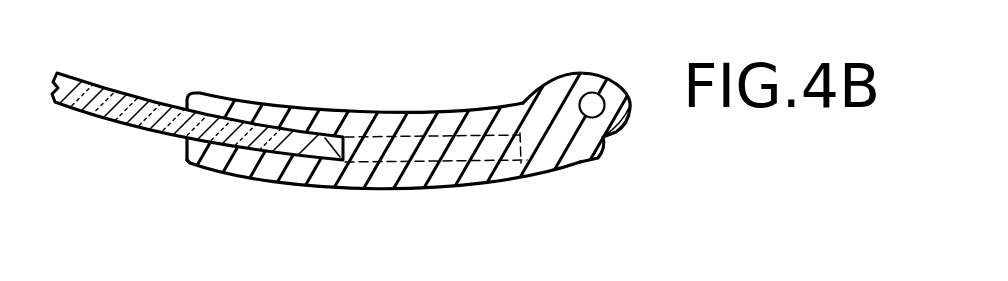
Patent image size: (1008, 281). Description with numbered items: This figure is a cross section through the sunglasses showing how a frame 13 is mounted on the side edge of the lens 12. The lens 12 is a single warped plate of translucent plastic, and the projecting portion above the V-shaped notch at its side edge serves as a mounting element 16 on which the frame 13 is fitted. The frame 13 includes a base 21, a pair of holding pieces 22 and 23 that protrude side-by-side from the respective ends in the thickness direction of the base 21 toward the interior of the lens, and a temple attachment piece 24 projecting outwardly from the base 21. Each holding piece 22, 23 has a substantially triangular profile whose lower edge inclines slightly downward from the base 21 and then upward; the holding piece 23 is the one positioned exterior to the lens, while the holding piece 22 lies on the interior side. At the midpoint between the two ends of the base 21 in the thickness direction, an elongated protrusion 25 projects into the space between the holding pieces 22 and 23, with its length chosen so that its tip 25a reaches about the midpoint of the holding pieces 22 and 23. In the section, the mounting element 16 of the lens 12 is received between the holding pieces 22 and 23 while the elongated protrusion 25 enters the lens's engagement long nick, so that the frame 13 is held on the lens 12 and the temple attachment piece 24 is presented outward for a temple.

The lens 12 is at (108, 120).
The mounting element 16 is at (125, 107).
The frame 13 is at (481, 99).
The holding piece 22 is at (263, 110).
The holding piece 23 is at (257, 173).
The temple attachment piece 24 is at (568, 87).
The elongated protrusion 25 is at (417, 147).
The tip 25a is at (322, 138).
The base 21 is at (545, 157).